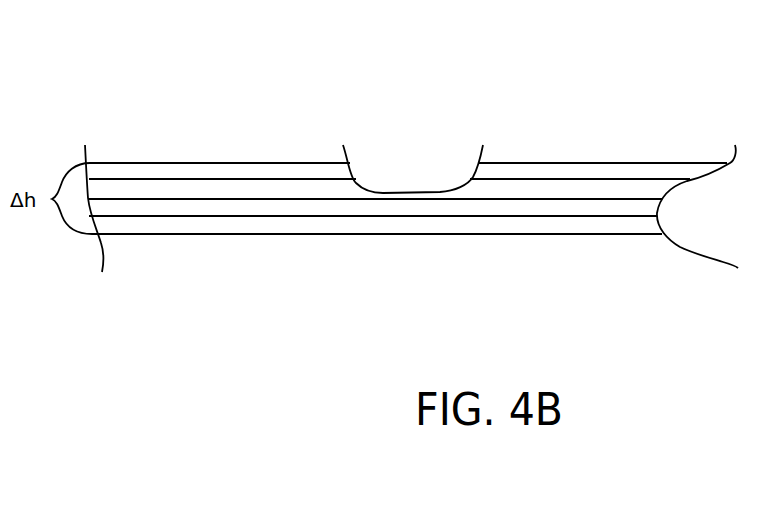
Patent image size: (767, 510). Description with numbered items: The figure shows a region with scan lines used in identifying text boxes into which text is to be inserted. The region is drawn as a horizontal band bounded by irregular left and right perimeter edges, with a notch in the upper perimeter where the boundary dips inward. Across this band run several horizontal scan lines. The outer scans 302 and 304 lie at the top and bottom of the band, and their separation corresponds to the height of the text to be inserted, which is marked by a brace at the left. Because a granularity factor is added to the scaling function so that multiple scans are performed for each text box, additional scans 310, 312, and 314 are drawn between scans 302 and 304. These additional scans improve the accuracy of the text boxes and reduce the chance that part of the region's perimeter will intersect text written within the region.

The scan 302 is at (523, 162).
The scan 304 is at (543, 234).
The additional scan 310 is at (158, 179).
The additional scan 312 is at (193, 198).
The additional scan 314 is at (247, 234).